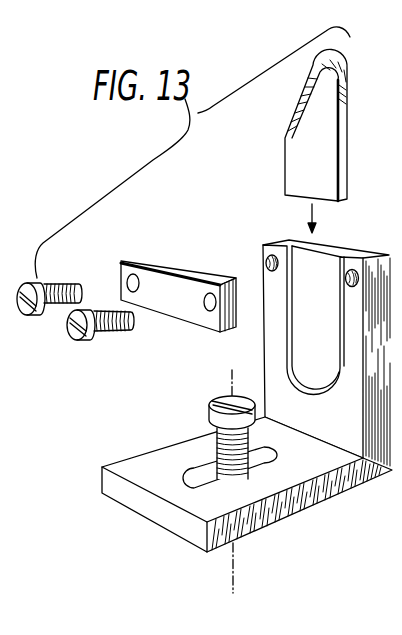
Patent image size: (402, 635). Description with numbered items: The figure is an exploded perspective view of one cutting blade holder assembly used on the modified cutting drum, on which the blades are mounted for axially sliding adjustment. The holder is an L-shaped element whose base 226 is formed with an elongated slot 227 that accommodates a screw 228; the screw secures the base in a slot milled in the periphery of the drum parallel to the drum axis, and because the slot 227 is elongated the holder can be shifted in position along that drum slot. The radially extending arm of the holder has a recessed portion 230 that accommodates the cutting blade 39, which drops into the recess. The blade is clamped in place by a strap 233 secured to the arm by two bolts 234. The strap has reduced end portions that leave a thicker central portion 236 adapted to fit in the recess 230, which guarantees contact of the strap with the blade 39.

The cutting blade 39 is at (348, 80).
The base 226 is at (339, 492).
The elongated slot 227 is at (203, 478).
The screw 228 is at (229, 396).
The recessed portion 230 is at (321, 263).
The strap 233 is at (154, 262).
The bolts 234 is at (63, 283).
The thicker central portion 236 is at (204, 270).